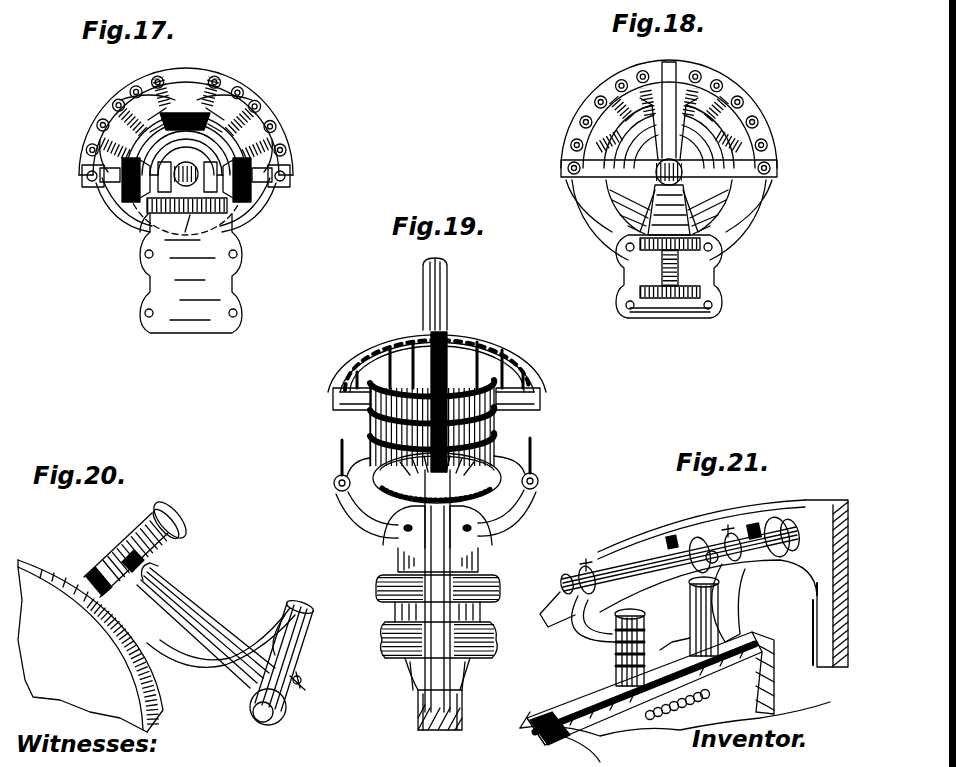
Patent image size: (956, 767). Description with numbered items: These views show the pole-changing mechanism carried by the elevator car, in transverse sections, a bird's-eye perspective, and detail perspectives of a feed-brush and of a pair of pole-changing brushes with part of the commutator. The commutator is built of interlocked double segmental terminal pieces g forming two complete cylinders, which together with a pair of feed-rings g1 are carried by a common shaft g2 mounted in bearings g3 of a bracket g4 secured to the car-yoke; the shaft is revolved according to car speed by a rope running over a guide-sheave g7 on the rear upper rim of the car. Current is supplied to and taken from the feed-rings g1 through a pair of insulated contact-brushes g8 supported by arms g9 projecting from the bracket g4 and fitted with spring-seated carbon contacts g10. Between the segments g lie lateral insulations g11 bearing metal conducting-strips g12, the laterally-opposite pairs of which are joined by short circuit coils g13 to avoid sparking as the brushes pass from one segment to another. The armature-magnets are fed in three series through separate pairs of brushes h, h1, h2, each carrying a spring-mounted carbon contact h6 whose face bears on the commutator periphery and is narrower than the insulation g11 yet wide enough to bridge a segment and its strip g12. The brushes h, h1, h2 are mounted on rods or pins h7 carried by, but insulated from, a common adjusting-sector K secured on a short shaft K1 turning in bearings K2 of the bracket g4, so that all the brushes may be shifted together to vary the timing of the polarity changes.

In FIG. 17, the rods or pins h7 is at (138, 91).
In FIG. 19, the rods or pins h7 is at (470, 345).
In FIG. 21, the rods or pins h7 is at (752, 522).
In FIG. 17, the adjusting-sector K is at (186, 100).
In FIG. 18, the adjusting-sector K is at (748, 108).
In FIG. 19, the adjusting-sector K is at (372, 356).
In FIG. 21, the adjusting-sector K is at (808, 505).
In FIG. 18, the short shaft K1 is at (622, 200).
In FIG. 19, the short shaft K1 is at (424, 289).
In FIG. 18, the bearings K2 is at (718, 200).
In FIG. 19, the commutator segmental terminal pieces g is at (370, 420).
In FIG. 19, the feed-rings g1 is at (496, 440).
In FIG. 20, the feed-rings g1 is at (62, 578).
In FIG. 17, the commutator-shaft g2 is at (186, 225).
In FIG. 19, the commutator-shaft g2 is at (452, 562).
In FIG. 17, the bearings g3 is at (145, 222).
In FIG. 19, the bearings g3 is at (398, 540).
In FIG. 17, the bracket g4 is at (215, 273).
In FIG. 18, the bracket g4 is at (700, 273).
In FIG. 19, the bracket g4 is at (420, 690).
In FIG. 20, the guide-sheave g7 is at (197, 678).
In FIG. 17, the contact-brushes g8 is at (100, 176).
In FIG. 18, the contact-brushes g8 is at (600, 140).
In FIG. 19, the contact-brushes g8 is at (492, 452).
In FIG. 20, the contact-brushes g8 is at (185, 612).
In FIG. 17, the arms g9 is at (118, 208).
In FIG. 18, the arms g9 is at (590, 193).
In FIG. 19, the arms g9 is at (356, 510).
In FIG. 20, the spring-seated carbon contacts g10 is at (95, 610).
In FIG. 17, the lateral insulation g11 is at (86, 186).
In FIG. 19, the lateral insulation g11 is at (438, 460).
In FIG. 21, the lateral insulation g11 is at (578, 742).
In FIG. 19, the metal conducting-strips g12 is at (440, 350).
In FIG. 21, the metal conducting-strips g12 is at (748, 634).
In FIG. 21, the short circuit wires or coils g13 is at (690, 718).
In FIG. 18, the brushes h is at (668, 76).
In FIG. 18, the brushes h1 is at (625, 95).
In FIG. 18, the brushes h2 is at (698, 85).
In FIG. 19, the brushes h2 is at (392, 348).
In FIG. 21, the brushes h2 is at (690, 612).
In FIG. 21, the spring-mounted carbon contacts h6 is at (700, 640).